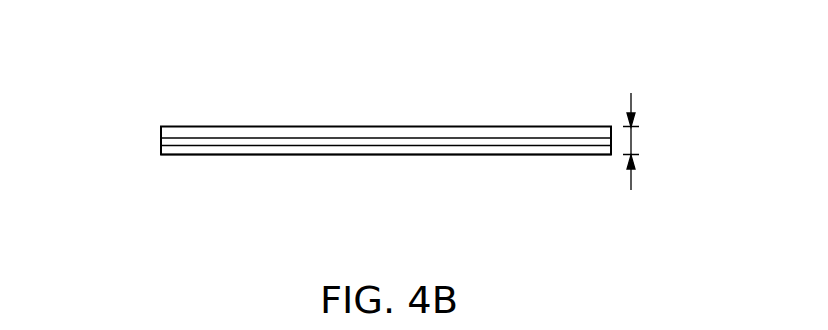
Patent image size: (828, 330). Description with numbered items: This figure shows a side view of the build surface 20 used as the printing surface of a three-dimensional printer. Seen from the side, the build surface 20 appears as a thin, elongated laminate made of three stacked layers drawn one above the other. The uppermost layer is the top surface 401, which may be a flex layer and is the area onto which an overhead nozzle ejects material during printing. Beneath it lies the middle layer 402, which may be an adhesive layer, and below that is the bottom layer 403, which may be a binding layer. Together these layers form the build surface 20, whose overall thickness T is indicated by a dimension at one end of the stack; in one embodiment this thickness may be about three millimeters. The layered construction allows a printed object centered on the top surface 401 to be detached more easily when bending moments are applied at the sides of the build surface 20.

The build surface 20 is at (210, 63).
The top surface 401 is at (436, 131).
The middle layer 402 is at (165, 142).
The bottom layer 403 is at (396, 150).
The thickness T is at (633, 140).